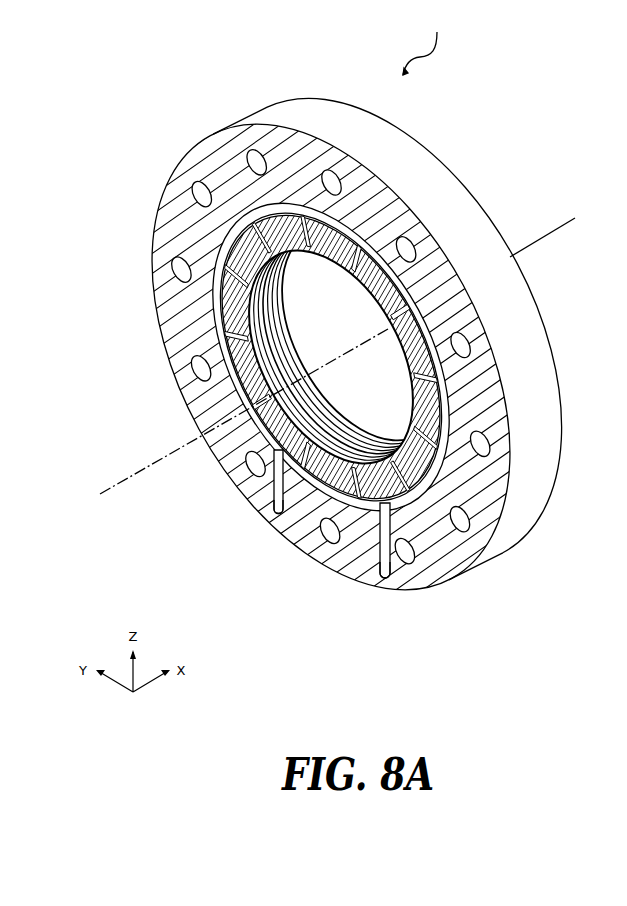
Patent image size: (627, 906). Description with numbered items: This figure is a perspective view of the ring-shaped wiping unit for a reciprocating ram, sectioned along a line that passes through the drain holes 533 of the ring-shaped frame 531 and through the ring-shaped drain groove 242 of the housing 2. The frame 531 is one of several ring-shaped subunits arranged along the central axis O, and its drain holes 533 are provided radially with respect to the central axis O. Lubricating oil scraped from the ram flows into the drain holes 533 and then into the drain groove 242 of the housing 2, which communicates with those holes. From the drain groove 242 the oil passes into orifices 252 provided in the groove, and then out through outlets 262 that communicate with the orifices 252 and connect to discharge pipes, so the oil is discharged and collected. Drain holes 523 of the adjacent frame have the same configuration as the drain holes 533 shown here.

The housing 2 is at (497, 278).
The drain groove 242 is at (470, 202).
The orifices 252 is at (273, 511).
The outlets 262 is at (282, 513).
The drain holes 523 is at (308, 334).
The frame 531 is at (331, 309).
The drain holes 533 is at (357, 227).
The central axis O is at (234, 418).